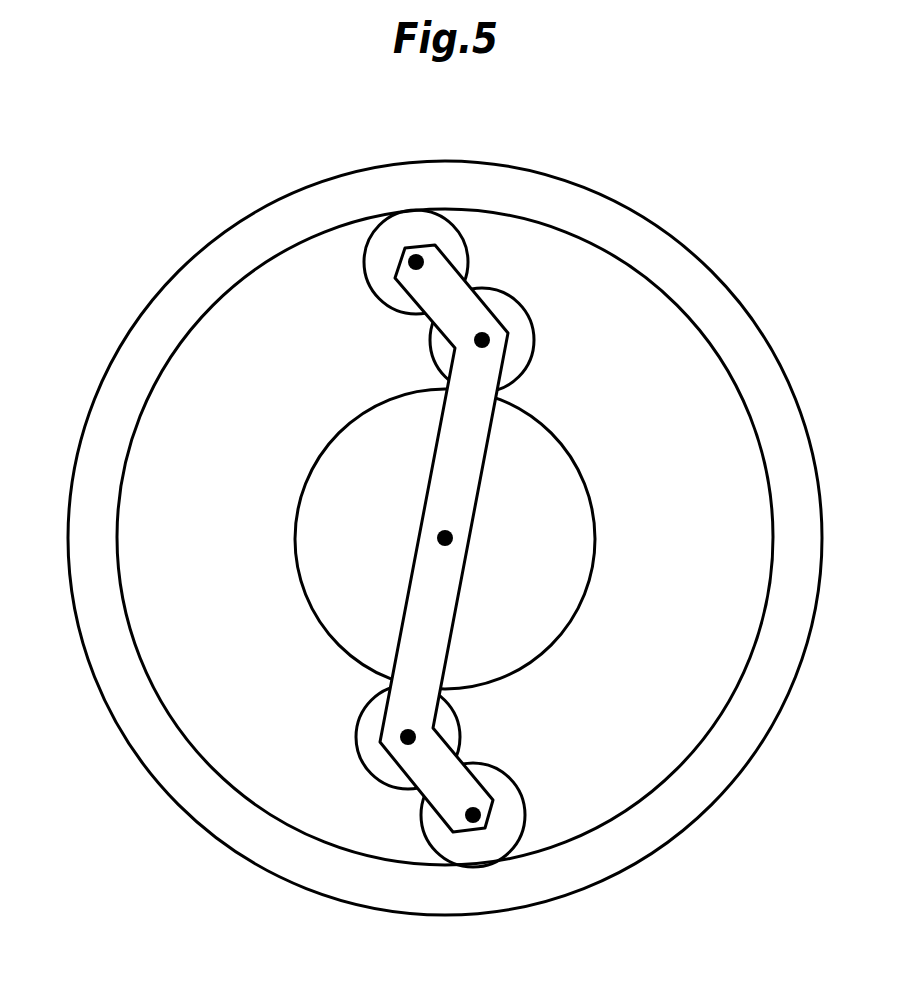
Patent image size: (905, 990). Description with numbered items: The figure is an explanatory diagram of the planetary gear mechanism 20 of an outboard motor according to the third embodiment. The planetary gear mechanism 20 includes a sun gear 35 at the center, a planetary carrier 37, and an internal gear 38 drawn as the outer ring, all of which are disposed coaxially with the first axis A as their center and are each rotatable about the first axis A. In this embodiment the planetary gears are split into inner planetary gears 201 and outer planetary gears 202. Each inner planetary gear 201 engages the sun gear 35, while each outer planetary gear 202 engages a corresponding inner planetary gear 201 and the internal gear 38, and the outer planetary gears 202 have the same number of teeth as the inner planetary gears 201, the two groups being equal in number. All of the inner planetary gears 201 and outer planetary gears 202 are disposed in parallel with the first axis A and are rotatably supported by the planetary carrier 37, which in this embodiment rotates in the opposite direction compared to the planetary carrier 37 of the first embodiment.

The planetary gear mechanism 20 is at (163, 150).
The internal gear 38 is at (727, 368).
The sun gear 35 is at (540, 437).
The planetary carrier 37 is at (443, 595).
The inner planetary gear 201 is at (522, 335).
The outer planetary gear 202 is at (377, 277).
The first axis A is at (443, 530).